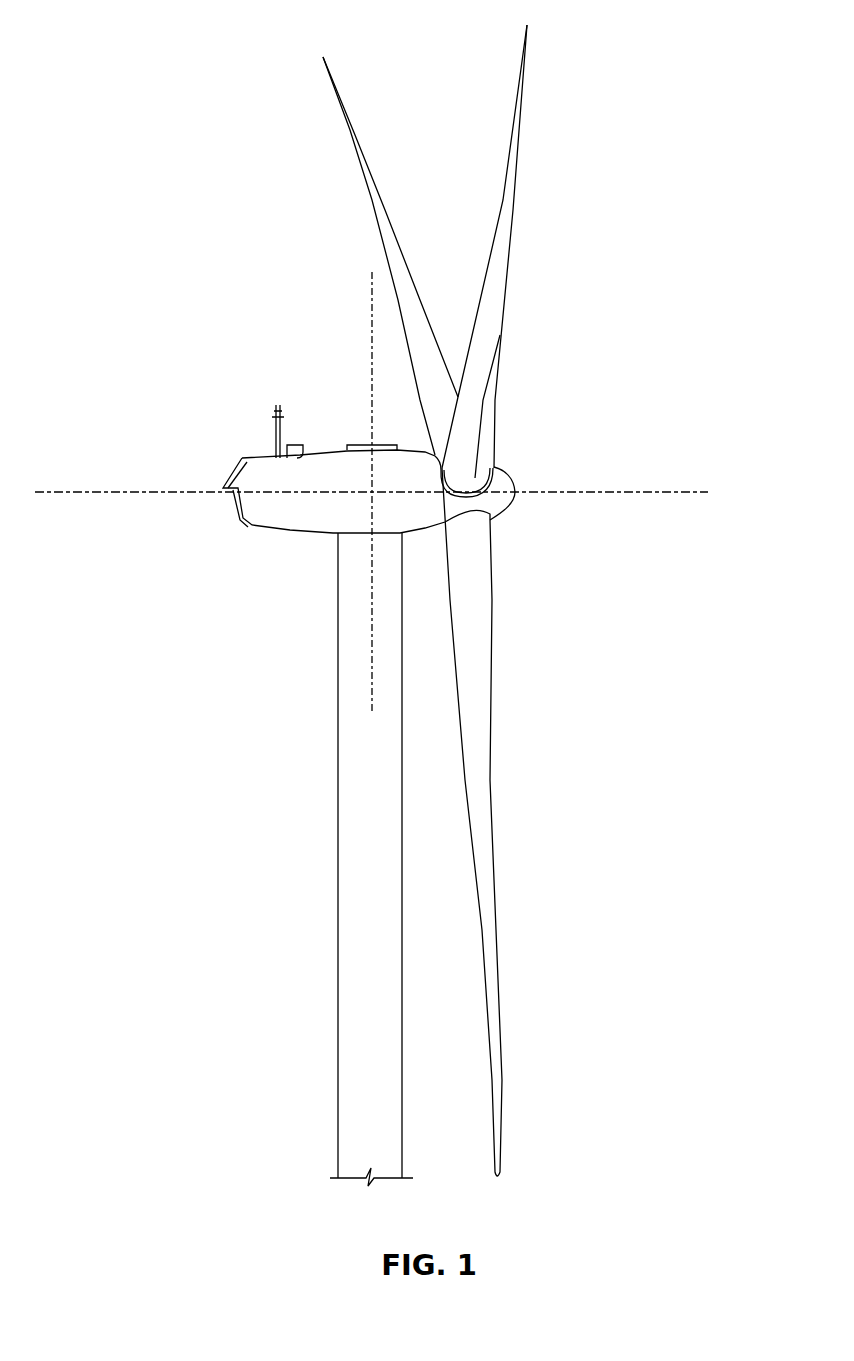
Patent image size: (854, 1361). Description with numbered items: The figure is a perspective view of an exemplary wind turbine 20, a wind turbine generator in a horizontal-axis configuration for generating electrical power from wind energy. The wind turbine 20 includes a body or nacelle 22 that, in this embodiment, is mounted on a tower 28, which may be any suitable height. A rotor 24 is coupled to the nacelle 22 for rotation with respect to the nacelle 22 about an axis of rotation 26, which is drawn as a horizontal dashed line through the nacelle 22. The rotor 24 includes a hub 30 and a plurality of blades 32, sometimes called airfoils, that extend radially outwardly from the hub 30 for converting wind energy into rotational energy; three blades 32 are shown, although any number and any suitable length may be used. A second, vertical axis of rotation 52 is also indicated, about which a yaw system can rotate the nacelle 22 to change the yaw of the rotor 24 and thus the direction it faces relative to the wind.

The wind turbine 20 is at (236, 84).
The nacelle 22 is at (290, 533).
The rotor 24 is at (503, 543).
The axis of rotation 26 is at (650, 495).
The tower 28 is at (338, 818).
The hub 30 is at (514, 495).
The blade 32 is at (367, 155).
The axis of rotation 52 is at (370, 328).